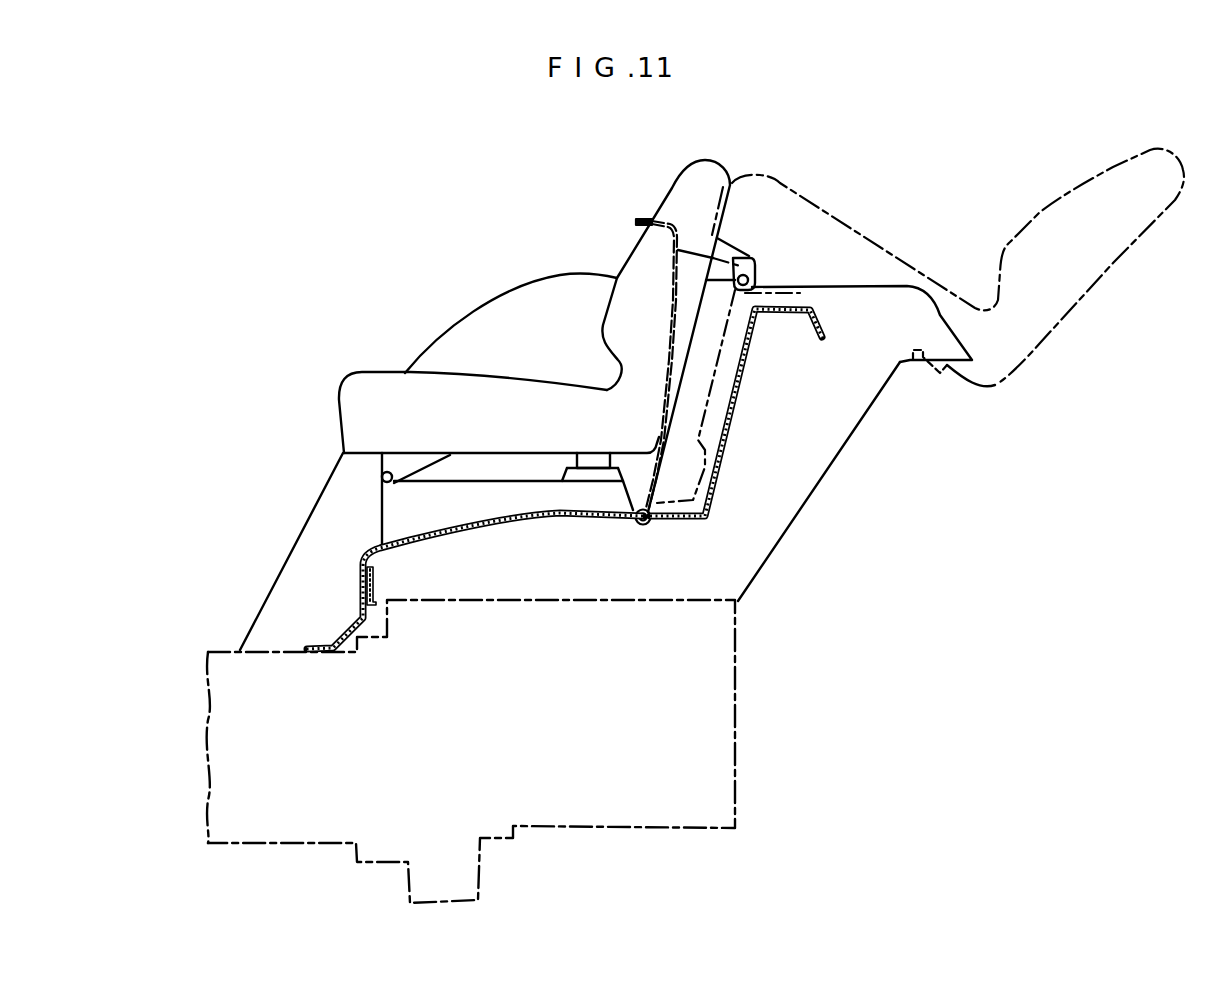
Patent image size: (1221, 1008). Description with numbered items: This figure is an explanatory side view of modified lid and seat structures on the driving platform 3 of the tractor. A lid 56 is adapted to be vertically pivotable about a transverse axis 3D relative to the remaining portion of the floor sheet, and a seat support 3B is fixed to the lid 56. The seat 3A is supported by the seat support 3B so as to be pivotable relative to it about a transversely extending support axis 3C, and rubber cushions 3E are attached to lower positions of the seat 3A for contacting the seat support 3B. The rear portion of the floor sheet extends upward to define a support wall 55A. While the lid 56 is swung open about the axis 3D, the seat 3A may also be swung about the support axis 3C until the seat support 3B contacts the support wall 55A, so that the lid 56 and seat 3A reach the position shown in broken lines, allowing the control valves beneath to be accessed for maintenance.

The driving platform 3 is at (531, 262).
The seat 3A is at (378, 386).
The seat support 3B is at (498, 492).
The support axis 3C is at (382, 478).
The transverse axis 3D is at (646, 526).
The rubber cushions 3E is at (592, 460).
The support wall 55A is at (733, 413).
The lid 56 is at (639, 214).